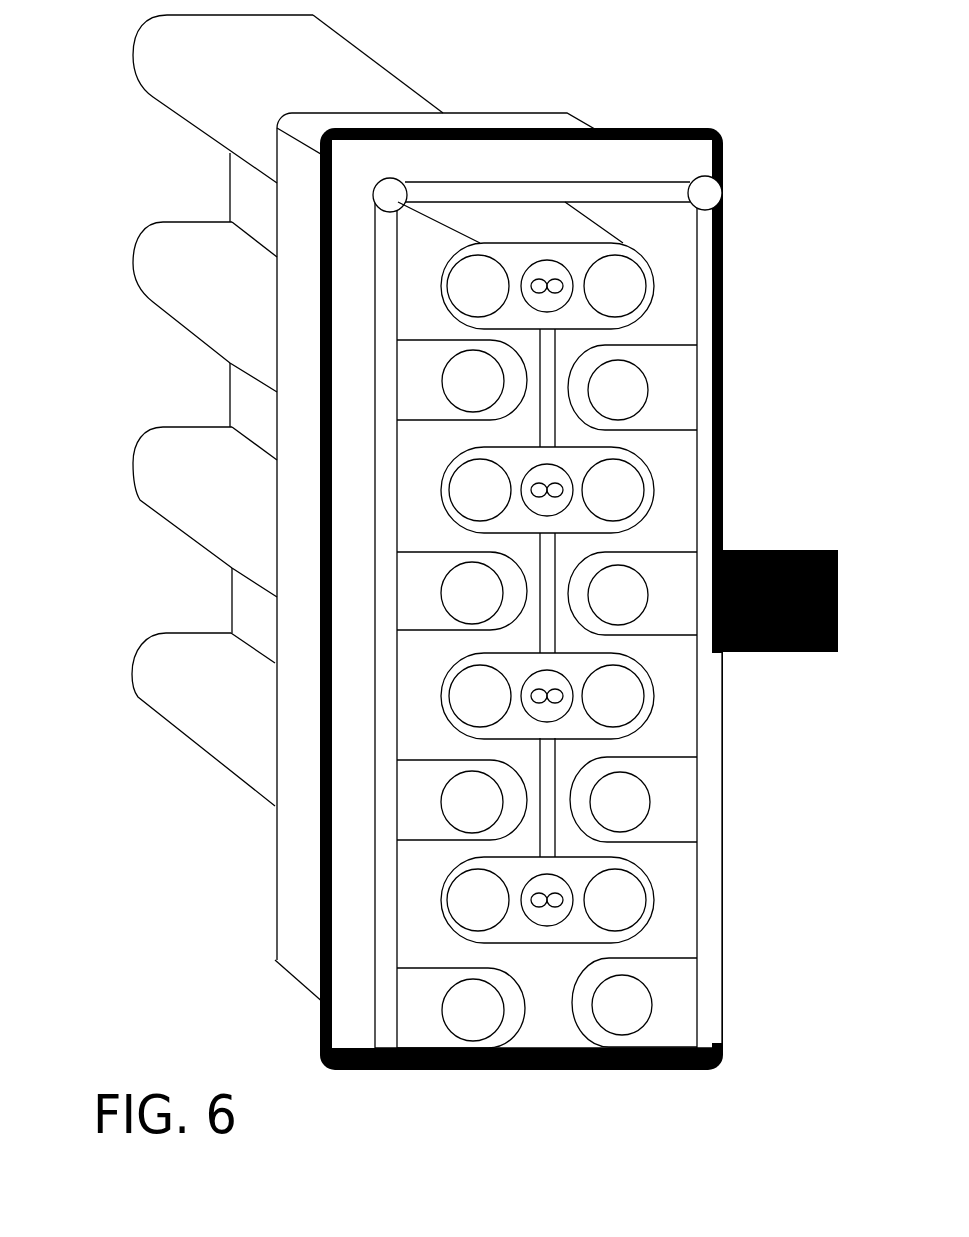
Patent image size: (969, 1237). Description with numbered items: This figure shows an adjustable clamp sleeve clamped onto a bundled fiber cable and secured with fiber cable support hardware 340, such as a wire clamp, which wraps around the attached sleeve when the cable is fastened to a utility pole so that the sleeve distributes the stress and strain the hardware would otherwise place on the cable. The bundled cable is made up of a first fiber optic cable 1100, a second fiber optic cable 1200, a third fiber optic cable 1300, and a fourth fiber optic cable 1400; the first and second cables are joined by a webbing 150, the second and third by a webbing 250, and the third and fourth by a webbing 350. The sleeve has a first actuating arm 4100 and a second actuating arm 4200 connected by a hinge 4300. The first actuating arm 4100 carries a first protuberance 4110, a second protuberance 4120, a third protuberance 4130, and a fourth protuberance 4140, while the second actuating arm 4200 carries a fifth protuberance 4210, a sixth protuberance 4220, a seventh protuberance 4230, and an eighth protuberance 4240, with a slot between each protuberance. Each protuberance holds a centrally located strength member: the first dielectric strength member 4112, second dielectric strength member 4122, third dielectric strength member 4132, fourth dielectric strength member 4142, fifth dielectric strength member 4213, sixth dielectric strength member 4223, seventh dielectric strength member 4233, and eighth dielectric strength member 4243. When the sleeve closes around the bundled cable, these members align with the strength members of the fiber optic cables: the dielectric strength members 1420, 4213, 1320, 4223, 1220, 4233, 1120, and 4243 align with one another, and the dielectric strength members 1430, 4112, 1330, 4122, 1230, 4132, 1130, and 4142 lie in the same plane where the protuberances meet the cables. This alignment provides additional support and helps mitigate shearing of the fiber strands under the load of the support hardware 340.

The fourth fiber optic cable 1400 is at (133, 58).
The webbing 350 is at (230, 193).
The third fiber optic cable 1300 is at (133, 263).
The webbing 250 is at (230, 387).
The second fiber optic cable 1200 is at (133, 468).
The webbing 150 is at (232, 603).
The first fiber optic cable 1100 is at (132, 674).
The second actuating arm 4200 is at (275, 936).
The first actuating arm 4100 is at (722, 966).
The hinge 4300 is at (547, 194).
The fiber cable support hardware 340 is at (780, 550).
The dielectric strength member 1420 is at (478, 286).
The dielectric strength member 1430 is at (615, 286).
The dielectric strength member 1320 is at (480, 490).
The dielectric strength member 1330 is at (613, 490).
The dielectric strength member 1220 is at (480, 696).
The dielectric strength member 1230 is at (613, 696).
The dielectric strength member 1120 is at (478, 900).
The dielectric strength member 1130 is at (615, 900).
The fifth protuberance 4210 is at (462, 380).
The fifth dielectric strength member 4213 is at (473, 381).
The first protuberance 4110 is at (632, 387).
The first dielectric strength member 4112 is at (618, 390).
The sixth protuberance 4220 is at (462, 591).
The sixth dielectric strength member 4223 is at (472, 593).
The second protuberance 4120 is at (632, 593).
The second dielectric strength member 4122 is at (618, 595).
The seventh protuberance 4230 is at (462, 800).
The seventh dielectric strength member 4233 is at (472, 802).
The third protuberance 4130 is at (633, 799).
The third dielectric strength member 4132 is at (620, 802).
The eighth protuberance 4240 is at (461, 1008).
The eighth dielectric strength member 4243 is at (473, 1010).
The fourth protuberance 4140 is at (634, 1002).
The fourth dielectric strength member 4142 is at (622, 1005).